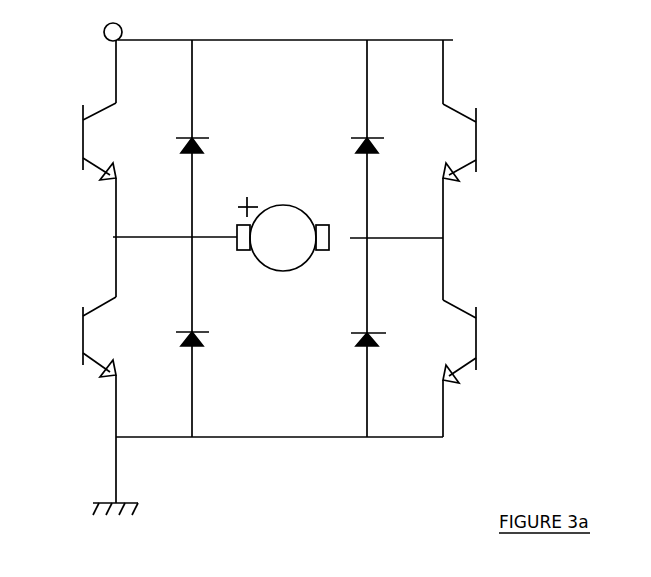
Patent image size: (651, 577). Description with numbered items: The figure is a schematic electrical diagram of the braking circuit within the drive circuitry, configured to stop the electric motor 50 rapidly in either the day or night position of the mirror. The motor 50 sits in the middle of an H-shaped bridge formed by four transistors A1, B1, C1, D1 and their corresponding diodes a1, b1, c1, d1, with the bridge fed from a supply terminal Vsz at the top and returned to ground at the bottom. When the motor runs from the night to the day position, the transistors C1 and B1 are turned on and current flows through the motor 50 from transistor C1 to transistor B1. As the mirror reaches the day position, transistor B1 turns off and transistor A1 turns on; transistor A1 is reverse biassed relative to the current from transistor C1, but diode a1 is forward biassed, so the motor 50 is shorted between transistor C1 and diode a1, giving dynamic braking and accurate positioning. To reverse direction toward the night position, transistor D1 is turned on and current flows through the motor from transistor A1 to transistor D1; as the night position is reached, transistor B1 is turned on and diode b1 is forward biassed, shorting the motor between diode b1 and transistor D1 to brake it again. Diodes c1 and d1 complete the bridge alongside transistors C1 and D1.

The electric motor 50 is at (277, 225).
The transistor A1 is at (83, 140).
The transistor B1 is at (83, 336).
The transistor C1 is at (476, 140).
The transistor D1 is at (476, 337).
The diode a1 is at (178, 138).
The diode b1 is at (178, 340).
The diode c1 is at (361, 138).
The diode d1 is at (358, 343).
The supply voltage terminal Vsz is at (106, 21).